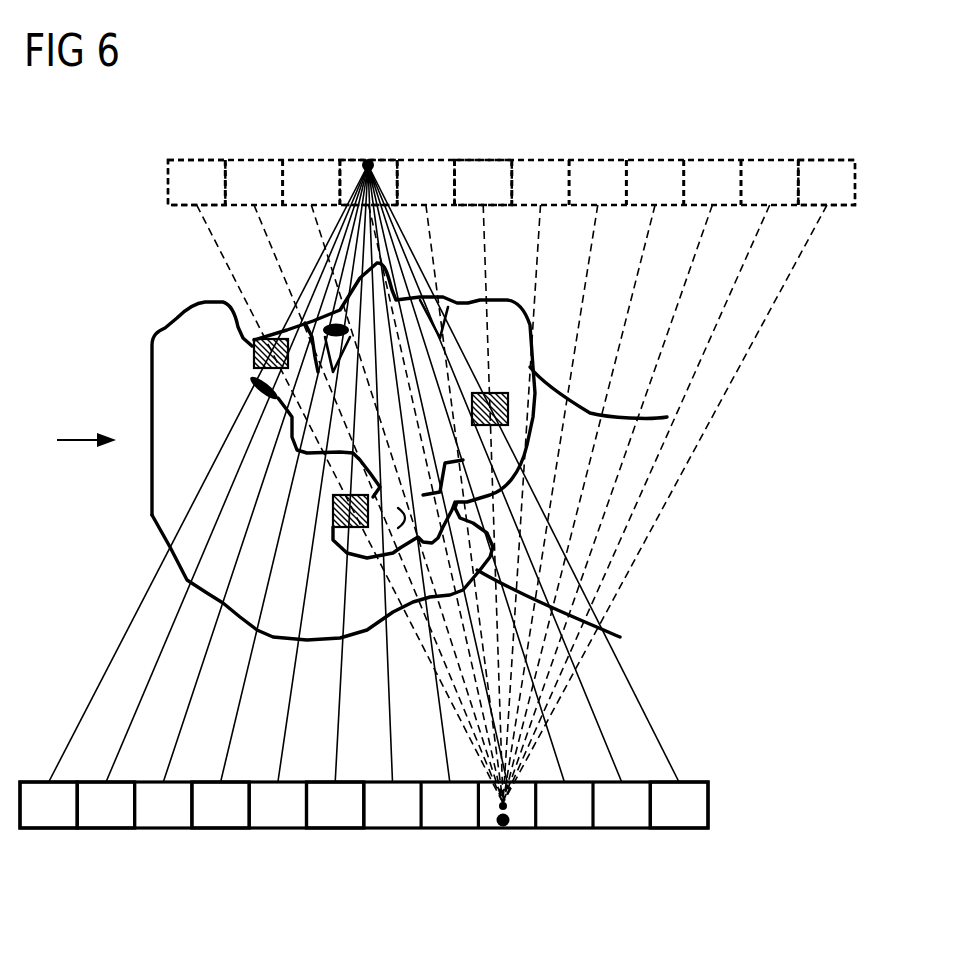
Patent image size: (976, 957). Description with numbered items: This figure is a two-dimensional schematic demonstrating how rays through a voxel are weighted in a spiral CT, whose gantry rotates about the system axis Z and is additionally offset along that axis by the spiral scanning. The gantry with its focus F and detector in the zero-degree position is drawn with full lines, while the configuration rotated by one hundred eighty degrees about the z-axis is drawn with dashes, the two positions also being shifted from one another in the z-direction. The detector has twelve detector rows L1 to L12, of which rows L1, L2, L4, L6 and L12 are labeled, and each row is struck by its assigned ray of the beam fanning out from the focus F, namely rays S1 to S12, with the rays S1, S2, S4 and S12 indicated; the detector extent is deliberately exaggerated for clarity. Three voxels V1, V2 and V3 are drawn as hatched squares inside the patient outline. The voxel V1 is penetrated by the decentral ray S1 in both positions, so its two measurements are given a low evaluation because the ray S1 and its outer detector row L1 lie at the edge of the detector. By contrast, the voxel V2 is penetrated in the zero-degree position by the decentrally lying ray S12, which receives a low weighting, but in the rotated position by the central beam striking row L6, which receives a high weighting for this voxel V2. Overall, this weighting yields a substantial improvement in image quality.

The detector row L1 is at (198, 172).
The detector row L2 is at (108, 818).
The detector row L4 is at (386, 170).
The detector row L6 is at (472, 172).
The detector row L12 is at (822, 172).
The focus F is at (368, 160).
The ray S1 is at (215, 238).
The ray S2 is at (134, 712).
The ray S4 is at (395, 312).
The ray S12 is at (660, 745).
The voxel V1 is at (256, 370).
The voxel V2 is at (498, 393).
The voxel V3 is at (333, 510).
The system axis Z is at (76, 439).